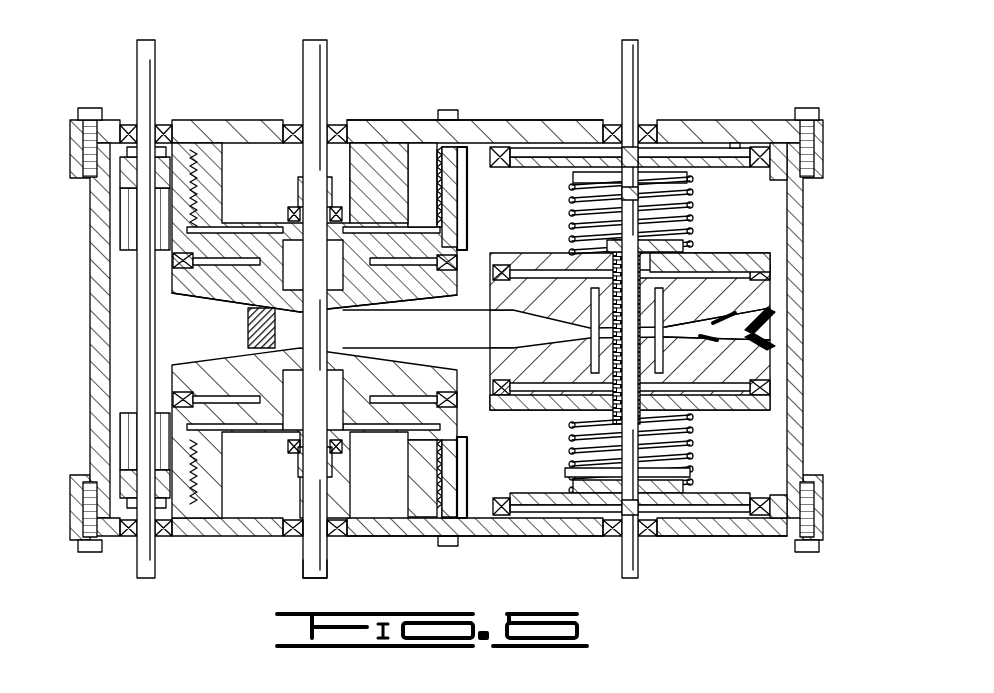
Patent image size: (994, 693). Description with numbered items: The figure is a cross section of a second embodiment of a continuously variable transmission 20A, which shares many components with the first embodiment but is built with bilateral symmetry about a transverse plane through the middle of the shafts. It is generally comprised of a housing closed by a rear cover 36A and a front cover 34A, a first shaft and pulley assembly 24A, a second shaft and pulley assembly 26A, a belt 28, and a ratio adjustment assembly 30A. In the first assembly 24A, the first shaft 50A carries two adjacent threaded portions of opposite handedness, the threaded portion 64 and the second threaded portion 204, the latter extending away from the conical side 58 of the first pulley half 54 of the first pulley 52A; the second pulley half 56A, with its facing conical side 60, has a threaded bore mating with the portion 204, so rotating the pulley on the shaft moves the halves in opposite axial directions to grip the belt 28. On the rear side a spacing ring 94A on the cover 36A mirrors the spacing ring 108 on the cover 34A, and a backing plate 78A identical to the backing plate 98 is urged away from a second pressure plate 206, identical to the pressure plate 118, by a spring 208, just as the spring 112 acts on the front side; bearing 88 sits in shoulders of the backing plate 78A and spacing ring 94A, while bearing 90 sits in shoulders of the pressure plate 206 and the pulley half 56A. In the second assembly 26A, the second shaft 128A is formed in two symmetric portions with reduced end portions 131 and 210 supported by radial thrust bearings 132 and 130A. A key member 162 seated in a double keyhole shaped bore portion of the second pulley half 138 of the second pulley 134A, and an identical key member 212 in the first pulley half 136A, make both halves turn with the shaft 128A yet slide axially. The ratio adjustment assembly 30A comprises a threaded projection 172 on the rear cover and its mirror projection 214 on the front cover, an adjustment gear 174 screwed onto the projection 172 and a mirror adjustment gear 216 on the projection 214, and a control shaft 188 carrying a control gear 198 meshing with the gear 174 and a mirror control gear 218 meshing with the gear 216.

The continuously variable transmission 20A is at (512, 108).
The reduced end portion 131 is at (322, 72).
The second shaft 128A is at (303, 165).
The radial thrust bearing 132 is at (330, 140).
The key member 162 is at (360, 222).
The second shaft and pulley assembly 26A is at (413, 170).
The threaded projection 172 is at (440, 172).
The ratio adjustment assembly 30A is at (441, 167).
The adjustment gear 174 is at (458, 200).
The rear cover 36A is at (530, 137).
The first shaft 50A is at (632, 74).
The first shaft and pulley assembly 24A is at (674, 168).
The spacing ring 94A is at (732, 145).
The bearing 88 is at (772, 158).
The backing plate 78A is at (745, 165).
The spring 208 is at (692, 213).
The second pressure plate 206 is at (760, 253).
The bearing 90 is at (755, 270).
The second pulley half 56A is at (752, 290).
The second threaded portion 204 is at (640, 312).
The conical side 60 is at (762, 322).
The conical side 58 is at (740, 340).
The belt 28 is at (760, 355).
The first pulley 52A is at (758, 381).
The first pulley half 54 is at (730, 368).
The pressure plate 118 is at (752, 407).
The threaded portion 64 is at (640, 400).
The spring 112 is at (692, 447).
The backing plate 98 is at (722, 495).
The spacing ring 108 is at (740, 516).
The front cover 34A is at (582, 523).
The adjustment gear 216 is at (450, 480).
The threaded projection 214 is at (422, 465).
The reduced end portion 210 is at (320, 560).
The radial thrust bearing 130A is at (328, 536).
The key member 212 is at (296, 398).
The control gear 198 is at (152, 215).
The second pulley half 138 is at (190, 280).
The control shaft 188 is at (150, 312).
The second pulley 134A is at (218, 352).
The first pulley half 136A is at (190, 378).
The control gear 218 is at (148, 437).